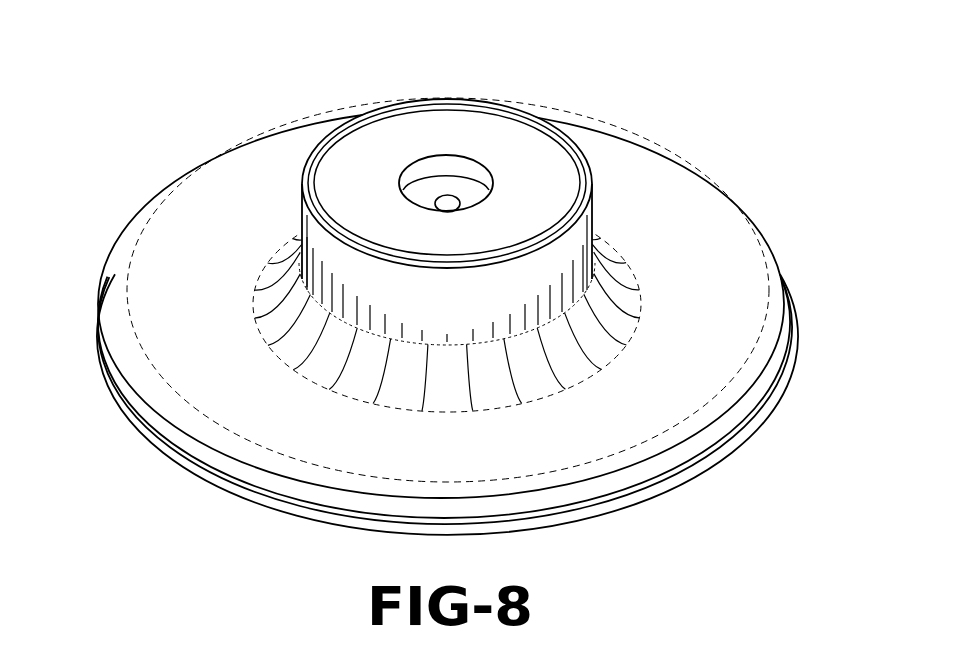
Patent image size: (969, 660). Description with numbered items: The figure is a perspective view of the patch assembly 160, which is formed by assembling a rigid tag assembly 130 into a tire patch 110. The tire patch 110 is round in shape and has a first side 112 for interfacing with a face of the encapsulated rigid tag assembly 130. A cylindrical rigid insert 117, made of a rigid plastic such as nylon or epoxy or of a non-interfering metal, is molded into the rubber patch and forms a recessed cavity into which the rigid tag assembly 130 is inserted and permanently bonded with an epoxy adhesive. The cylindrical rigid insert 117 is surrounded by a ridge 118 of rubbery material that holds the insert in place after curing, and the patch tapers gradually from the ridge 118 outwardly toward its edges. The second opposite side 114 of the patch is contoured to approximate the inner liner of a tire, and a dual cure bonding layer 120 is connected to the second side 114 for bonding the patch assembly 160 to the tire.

The patch assembly 160 is at (438, 291).
The tire patch 110 is at (438, 294).
The first side 112 is at (705, 263).
The second opposite side 114 is at (645, 483).
The cylindrical rigid insert 117 is at (328, 148).
The ridge 118 is at (397, 293).
The dual cure bonding layer 120 is at (228, 487).
The rigid tag assembly 130 is at (482, 197).